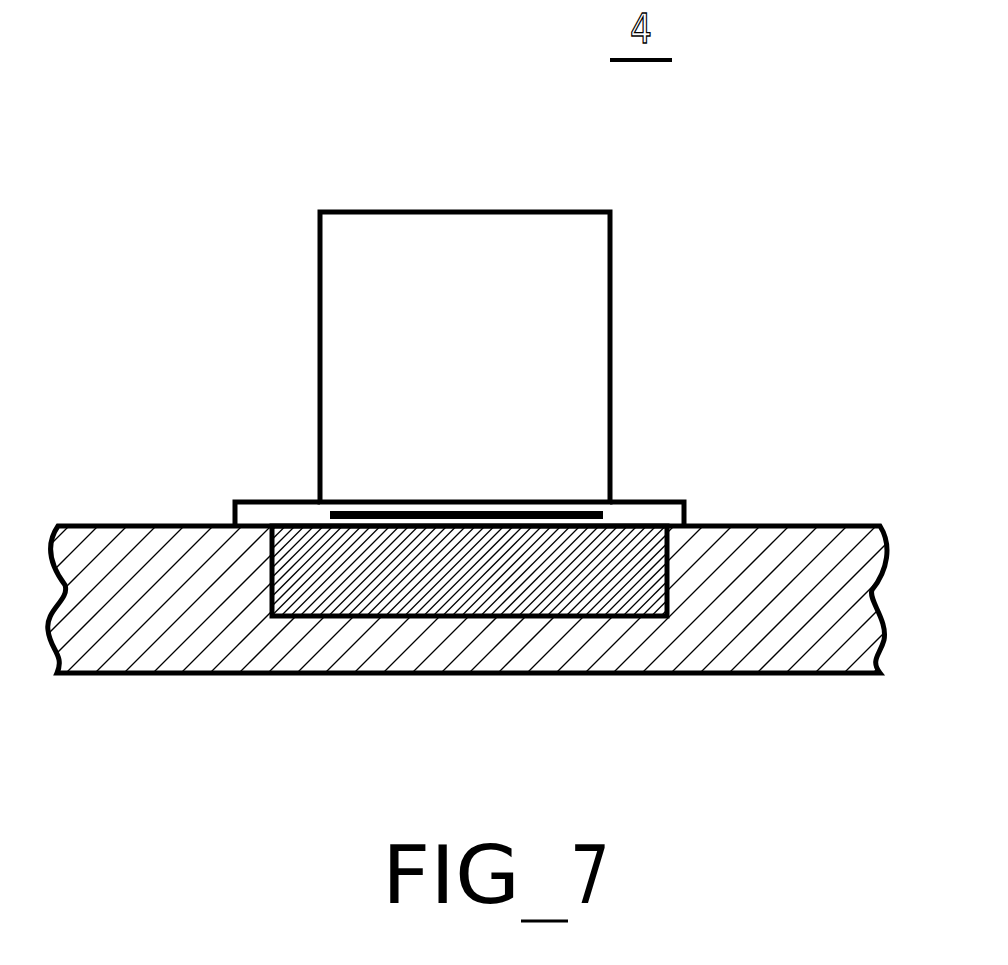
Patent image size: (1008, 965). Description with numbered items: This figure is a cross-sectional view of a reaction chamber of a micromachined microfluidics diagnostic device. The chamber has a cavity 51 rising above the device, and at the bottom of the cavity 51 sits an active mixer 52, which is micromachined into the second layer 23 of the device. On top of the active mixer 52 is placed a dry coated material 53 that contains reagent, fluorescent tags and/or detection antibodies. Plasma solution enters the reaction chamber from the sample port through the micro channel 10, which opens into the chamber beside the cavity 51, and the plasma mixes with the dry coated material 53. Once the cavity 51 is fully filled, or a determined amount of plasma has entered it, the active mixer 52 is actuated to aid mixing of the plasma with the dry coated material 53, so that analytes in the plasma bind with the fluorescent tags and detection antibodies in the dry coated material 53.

The micro channel 10 is at (273, 512).
The second layer 23 is at (735, 643).
The cavity 51 is at (423, 237).
The active mixer 52 is at (332, 595).
The dry coated material 53 is at (450, 513).